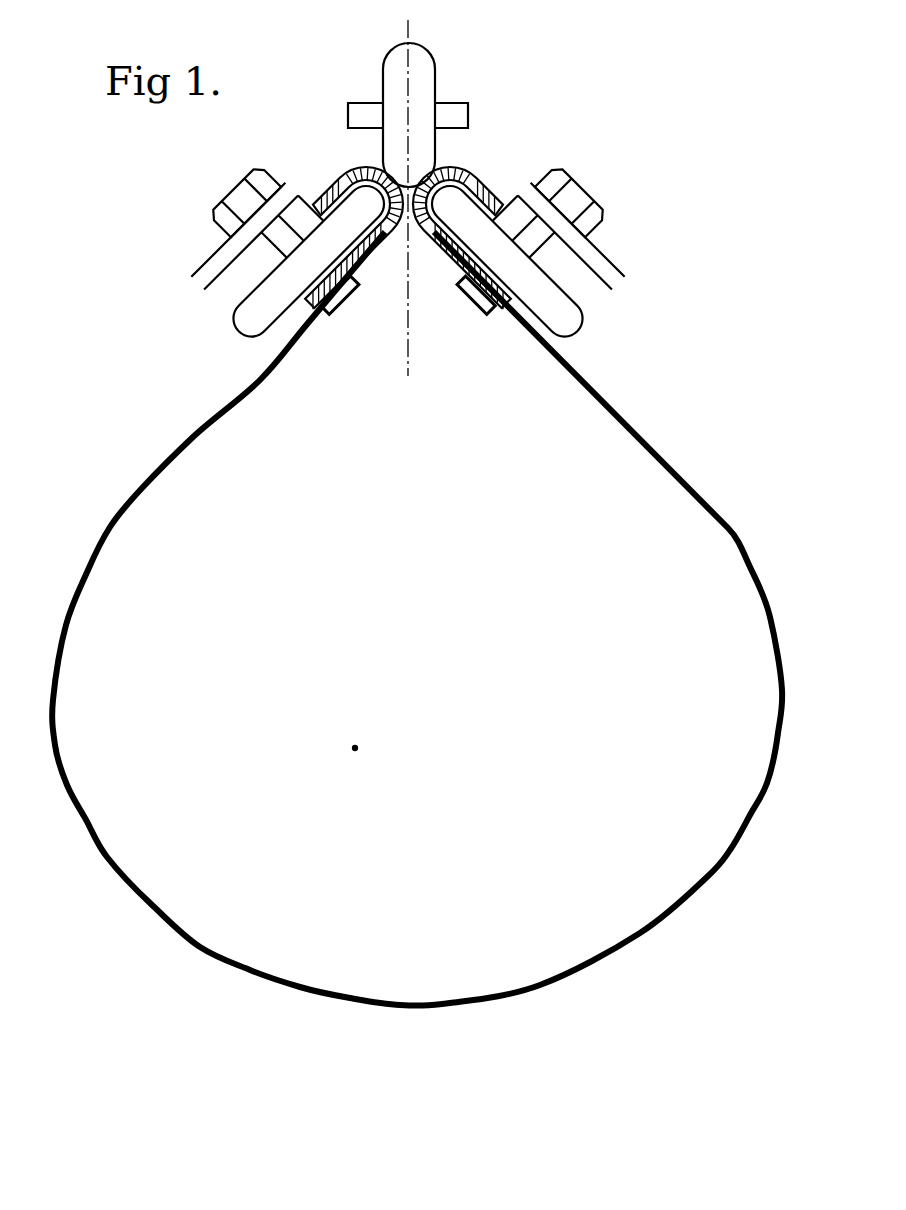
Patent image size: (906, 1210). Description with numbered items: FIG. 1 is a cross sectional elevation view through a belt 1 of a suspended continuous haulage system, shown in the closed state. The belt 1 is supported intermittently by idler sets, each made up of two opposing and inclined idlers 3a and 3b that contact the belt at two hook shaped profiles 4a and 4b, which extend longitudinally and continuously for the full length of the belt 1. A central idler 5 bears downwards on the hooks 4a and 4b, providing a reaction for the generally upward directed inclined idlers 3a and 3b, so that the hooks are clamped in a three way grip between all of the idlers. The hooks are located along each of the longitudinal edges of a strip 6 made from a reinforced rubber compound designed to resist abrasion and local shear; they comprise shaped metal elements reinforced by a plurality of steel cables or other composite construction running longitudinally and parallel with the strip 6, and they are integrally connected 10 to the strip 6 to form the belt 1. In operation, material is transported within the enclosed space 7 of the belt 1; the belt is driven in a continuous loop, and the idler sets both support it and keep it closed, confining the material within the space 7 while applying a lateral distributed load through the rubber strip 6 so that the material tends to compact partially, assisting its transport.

The belt 1 is at (417, 530).
The inclined idler 3a is at (596, 304).
The inclined idler 3b is at (233, 320).
The hook shaped profile 4a is at (487, 177).
The hook shaped profile 4b is at (333, 183).
The central idler 5 is at (436, 72).
The strip 6 is at (417, 619).
The enclosed space 7 is at (355, 748).
The integral connection 10 is at (603, 388).